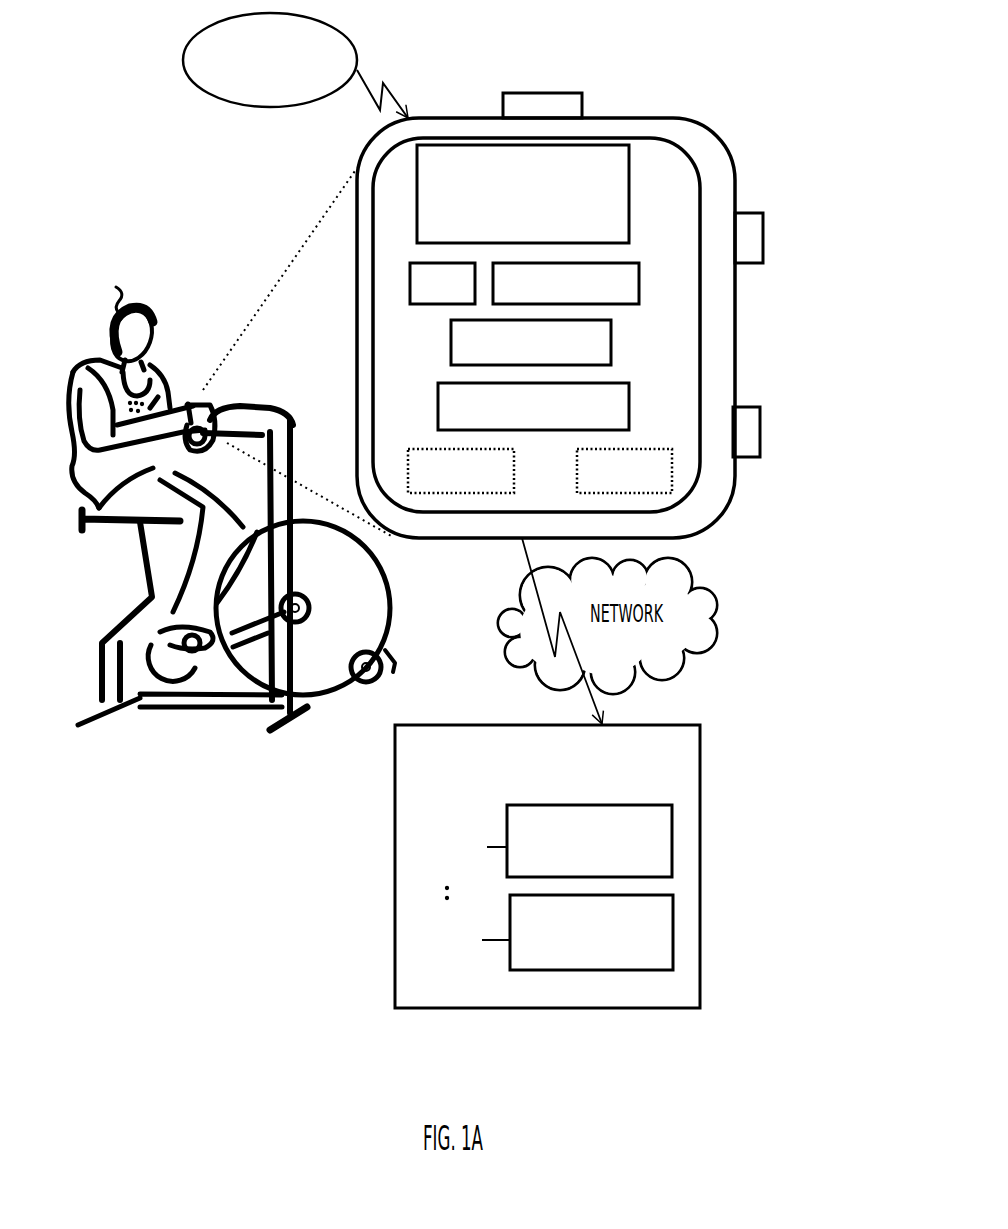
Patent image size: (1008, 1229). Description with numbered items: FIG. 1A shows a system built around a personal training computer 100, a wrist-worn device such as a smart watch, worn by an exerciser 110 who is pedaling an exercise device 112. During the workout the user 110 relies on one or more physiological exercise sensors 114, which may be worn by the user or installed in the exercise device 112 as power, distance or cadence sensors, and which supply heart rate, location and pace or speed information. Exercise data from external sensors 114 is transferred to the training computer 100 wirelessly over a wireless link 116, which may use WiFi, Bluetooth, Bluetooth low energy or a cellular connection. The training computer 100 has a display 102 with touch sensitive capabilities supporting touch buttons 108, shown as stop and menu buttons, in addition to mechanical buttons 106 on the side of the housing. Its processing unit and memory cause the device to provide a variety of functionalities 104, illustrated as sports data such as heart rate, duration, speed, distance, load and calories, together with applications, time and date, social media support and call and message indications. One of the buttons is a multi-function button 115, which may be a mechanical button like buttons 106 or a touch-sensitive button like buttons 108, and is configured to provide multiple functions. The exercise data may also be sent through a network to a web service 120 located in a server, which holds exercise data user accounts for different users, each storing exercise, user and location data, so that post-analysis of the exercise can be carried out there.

The training computer 100 is at (337, 163).
The display 102 is at (628, 142).
The functionalities 104 is at (631, 405).
The mechanical buttons 106 is at (832, 273).
The touch buttons 108 is at (516, 472).
The exerciser 110 is at (163, 469).
The exercise device 112 is at (270, 730).
The physiological exercise sensors 114 is at (58, 435).
The multi-function button 115 is at (568, 72).
The wireless link 116 is at (370, 82).
The web service 120 is at (547, 866).